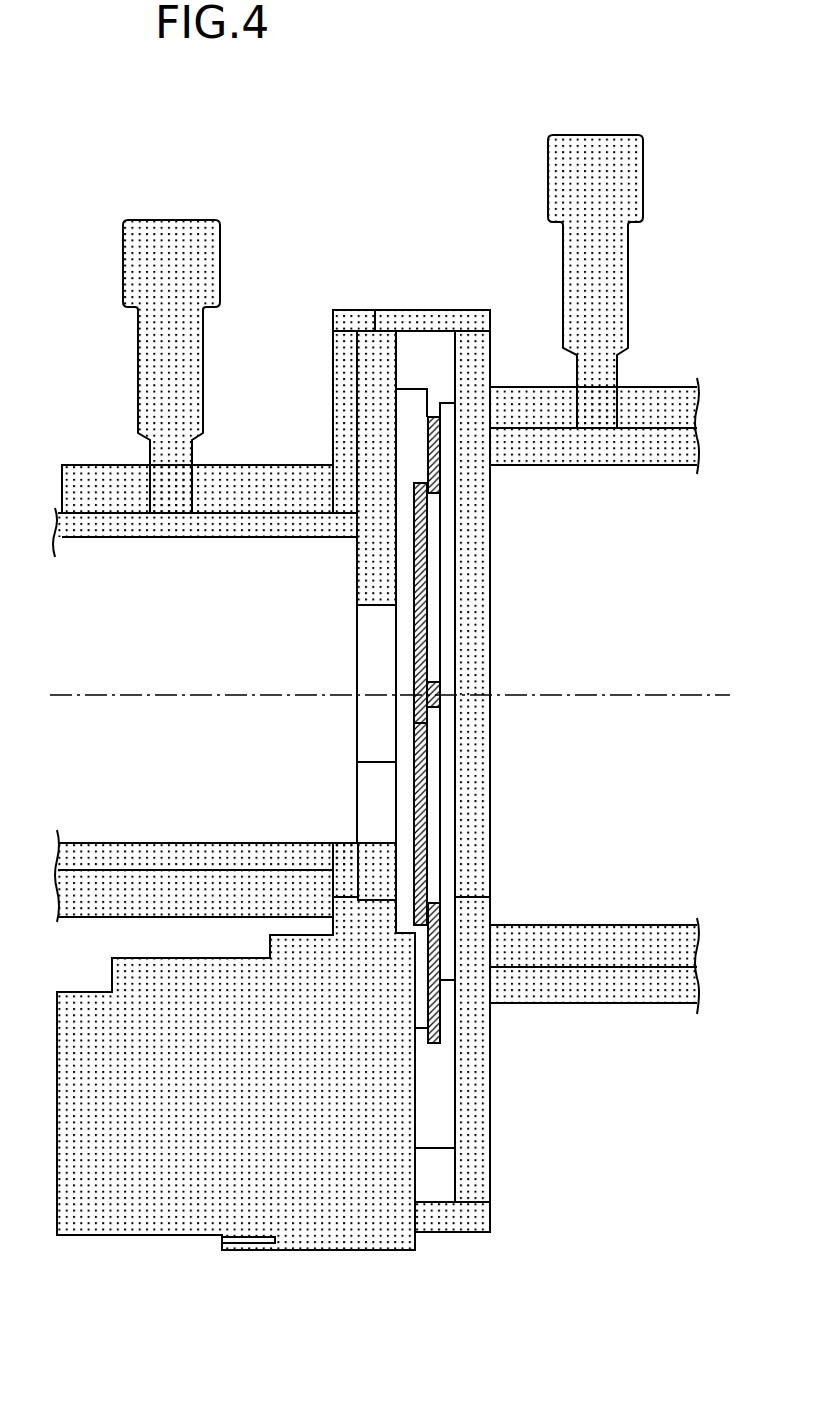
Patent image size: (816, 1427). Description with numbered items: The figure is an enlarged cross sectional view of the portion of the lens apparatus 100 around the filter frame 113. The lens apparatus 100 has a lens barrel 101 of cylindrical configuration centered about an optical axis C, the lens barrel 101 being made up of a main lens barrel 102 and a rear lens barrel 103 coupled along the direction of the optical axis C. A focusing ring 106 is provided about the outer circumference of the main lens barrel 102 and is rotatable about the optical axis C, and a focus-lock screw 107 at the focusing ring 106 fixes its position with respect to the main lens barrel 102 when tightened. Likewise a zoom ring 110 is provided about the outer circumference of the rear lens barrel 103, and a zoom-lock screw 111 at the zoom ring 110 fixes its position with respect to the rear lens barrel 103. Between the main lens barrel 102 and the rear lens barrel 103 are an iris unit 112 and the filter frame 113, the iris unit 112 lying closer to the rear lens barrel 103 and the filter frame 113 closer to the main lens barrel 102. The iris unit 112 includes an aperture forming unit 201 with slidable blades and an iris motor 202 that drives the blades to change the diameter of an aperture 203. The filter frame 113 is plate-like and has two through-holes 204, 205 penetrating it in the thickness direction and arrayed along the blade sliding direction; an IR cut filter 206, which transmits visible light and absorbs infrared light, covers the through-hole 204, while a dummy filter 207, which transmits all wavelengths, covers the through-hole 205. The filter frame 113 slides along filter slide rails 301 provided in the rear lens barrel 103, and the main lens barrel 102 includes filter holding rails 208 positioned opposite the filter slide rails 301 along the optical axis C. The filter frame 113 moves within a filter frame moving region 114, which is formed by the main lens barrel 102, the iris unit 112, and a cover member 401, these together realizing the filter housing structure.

The lens apparatus 100 is at (468, 53).
The lens barrel 101 is at (490, 1142).
The main lens barrel 102 is at (650, 457).
The rear lens barrel 103 is at (95, 527).
The focusing ring 106 is at (678, 407).
The focus-lock screw 107 is at (600, 135).
The zoom ring 110 is at (88, 465).
The zoom-lock screw 111 is at (177, 220).
The iris unit 112 is at (280, 1251).
The filter frame 113 is at (440, 487).
The filter frame moving region 114 is at (430, 350).
The aperture forming unit 201 is at (360, 378).
The iris motor 202 is at (155, 1220).
The aperture 203 is at (372, 655).
The through-hole 204 is at (437, 622).
The through-hole 205 is at (432, 753).
The IR cut filter 206 is at (422, 540).
The dummy filter 207 is at (430, 827).
The filter holding rails 208 is at (412, 403).
The filter slide rails 301 is at (453, 404).
The cover member 401 is at (463, 1220).
The optical axis C is at (692, 690).